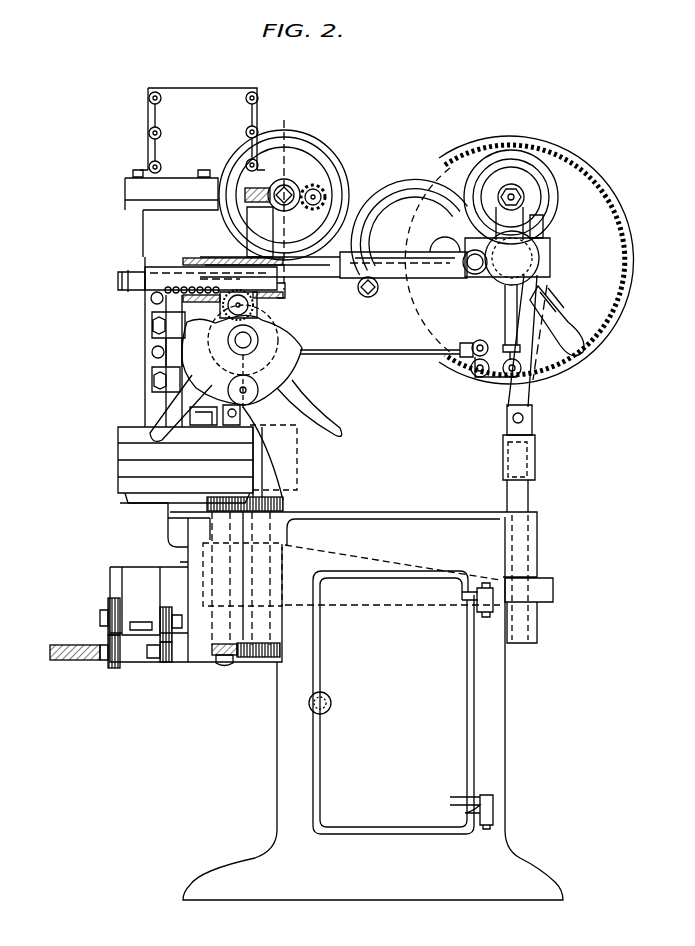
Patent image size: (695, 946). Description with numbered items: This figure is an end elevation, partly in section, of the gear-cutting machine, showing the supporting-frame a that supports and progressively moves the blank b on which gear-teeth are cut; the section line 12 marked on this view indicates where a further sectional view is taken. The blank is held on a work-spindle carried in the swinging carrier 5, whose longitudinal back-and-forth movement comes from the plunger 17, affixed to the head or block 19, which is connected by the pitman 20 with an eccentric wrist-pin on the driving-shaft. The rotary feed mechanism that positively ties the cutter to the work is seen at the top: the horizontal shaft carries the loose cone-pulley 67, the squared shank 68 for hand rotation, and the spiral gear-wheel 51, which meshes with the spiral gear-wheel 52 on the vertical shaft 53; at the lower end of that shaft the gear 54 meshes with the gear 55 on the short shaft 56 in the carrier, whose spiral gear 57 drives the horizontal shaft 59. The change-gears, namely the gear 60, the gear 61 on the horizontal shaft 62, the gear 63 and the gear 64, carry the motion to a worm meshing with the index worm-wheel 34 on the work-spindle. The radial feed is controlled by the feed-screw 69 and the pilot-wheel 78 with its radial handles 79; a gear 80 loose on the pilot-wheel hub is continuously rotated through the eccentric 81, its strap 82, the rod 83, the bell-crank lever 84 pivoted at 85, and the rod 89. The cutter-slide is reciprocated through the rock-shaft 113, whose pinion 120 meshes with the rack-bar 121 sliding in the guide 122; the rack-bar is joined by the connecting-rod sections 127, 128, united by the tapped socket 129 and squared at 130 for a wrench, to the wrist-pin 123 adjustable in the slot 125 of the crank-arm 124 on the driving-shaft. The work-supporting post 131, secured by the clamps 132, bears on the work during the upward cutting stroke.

The spindle 12 is at (285, 88).
The spiral gear-wheel 52 is at (255, 190).
The squared shank 68 is at (287, 190).
The cone-pulley 67 is at (330, 200).
The spiral gear-wheel 51 is at (330, 180).
The tapped socket 129 is at (383, 185).
The connecting-rod section 128 is at (438, 255).
The crank-arm 124 is at (492, 243).
The slot or guide 125 is at (540, 265).
The strap 82 is at (555, 283).
The wrist-pin 123 is at (486, 278).
The eccentric 81 is at (505, 305).
The rod 83 is at (503, 325).
The pivot 85 is at (475, 380).
The bell-crank lever 84 is at (505, 380).
The rod 89 is at (368, 355).
The pitman 20 is at (530, 403).
The head or block 19 is at (535, 455).
The supporting-frame a is at (488, 500).
The plunger 17 is at (525, 498).
The connecting-rod section 127 is at (322, 272).
The pinion 120 is at (281, 222).
The guide 122 is at (240, 262).
The squared end 130 is at (118, 280).
The rock-shaft 113 is at (224, 275).
The rack-bar 121 is at (178, 305).
The clamps 132 is at (152, 327).
The gear 80 is at (152, 372).
The work-supporting post or bar 131 is at (182, 400).
The blank b is at (120, 440).
The feed-screw 69 is at (248, 345).
The pilot-wheel 78 is at (258, 398).
The radial handles 79 is at (335, 422).
The vertical shaft 53 is at (258, 465).
The gear 54 is at (288, 500).
The gear 55 is at (205, 500).
The carrier 5 is at (200, 530).
The short shaft 56 is at (215, 555).
The spiral gear 57 is at (222, 650).
The gear 63 is at (108, 605).
The gear 64 is at (110, 672).
The gear 61 is at (165, 607).
The gear 60 is at (164, 663).
The horizontal shaft 59 is at (152, 652).
The horizontal shaft 62 is at (182, 622).
The index worm-wheel 34 is at (55, 662).